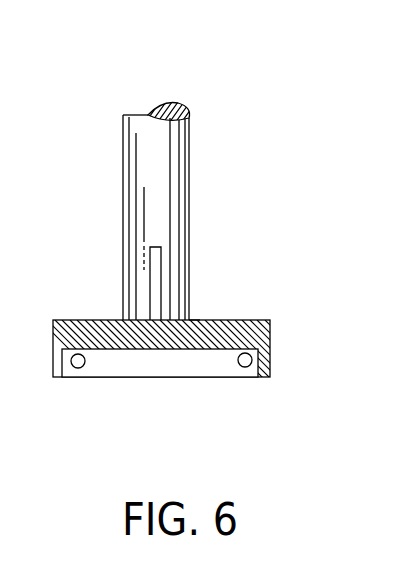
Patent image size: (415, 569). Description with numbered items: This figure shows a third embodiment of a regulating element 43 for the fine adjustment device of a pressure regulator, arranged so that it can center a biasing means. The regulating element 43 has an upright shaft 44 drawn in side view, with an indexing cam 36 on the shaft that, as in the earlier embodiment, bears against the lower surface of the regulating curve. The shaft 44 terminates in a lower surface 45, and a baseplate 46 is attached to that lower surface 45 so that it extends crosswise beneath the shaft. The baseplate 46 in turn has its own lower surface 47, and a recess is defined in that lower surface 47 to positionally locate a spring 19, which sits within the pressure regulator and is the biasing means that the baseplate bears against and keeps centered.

The regulating element 43 is at (154, 102).
The shaft 44 is at (189, 133).
The indexing cam 36 is at (159, 279).
The lower surface 45 is at (192, 318).
The baseplate 46 is at (272, 335).
The lower surface 47 is at (140, 350).
The spring 19 is at (251, 367).